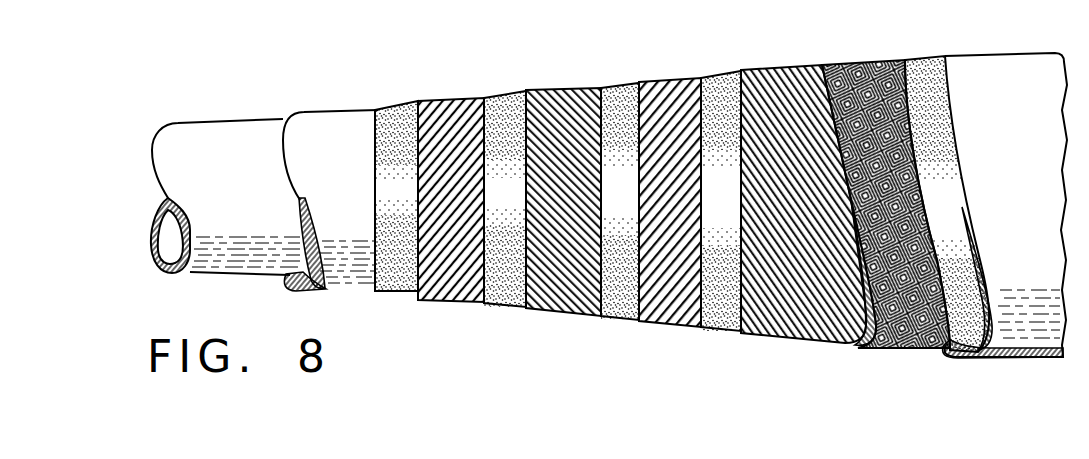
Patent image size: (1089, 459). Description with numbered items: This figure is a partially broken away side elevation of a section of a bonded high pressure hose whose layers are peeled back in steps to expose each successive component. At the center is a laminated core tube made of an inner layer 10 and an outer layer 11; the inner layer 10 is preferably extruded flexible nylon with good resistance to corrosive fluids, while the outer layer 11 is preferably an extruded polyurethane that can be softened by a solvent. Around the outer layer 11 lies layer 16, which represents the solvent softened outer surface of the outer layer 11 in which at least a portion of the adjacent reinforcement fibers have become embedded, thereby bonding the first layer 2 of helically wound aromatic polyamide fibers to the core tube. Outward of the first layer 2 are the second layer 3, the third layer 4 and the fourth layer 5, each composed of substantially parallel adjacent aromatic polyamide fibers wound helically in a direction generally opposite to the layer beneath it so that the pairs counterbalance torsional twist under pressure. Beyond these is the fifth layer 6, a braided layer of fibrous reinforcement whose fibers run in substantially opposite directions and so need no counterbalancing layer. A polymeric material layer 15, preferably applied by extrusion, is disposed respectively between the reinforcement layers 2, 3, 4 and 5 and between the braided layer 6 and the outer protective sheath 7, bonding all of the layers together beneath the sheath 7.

The inner layer 10 is at (232, 123).
The outer layer 11 is at (312, 112).
The layer 16 is at (396, 110).
The first layer 2 is at (450, 100).
The polymeric material layer 15 is at (504, 98).
The second layer 3 is at (561, 90).
The third layer 4 is at (661, 82).
The fourth layer 5 is at (784, 70).
The fifth layer 6 is at (884, 65).
The outer protective sheath 7 is at (1019, 53).